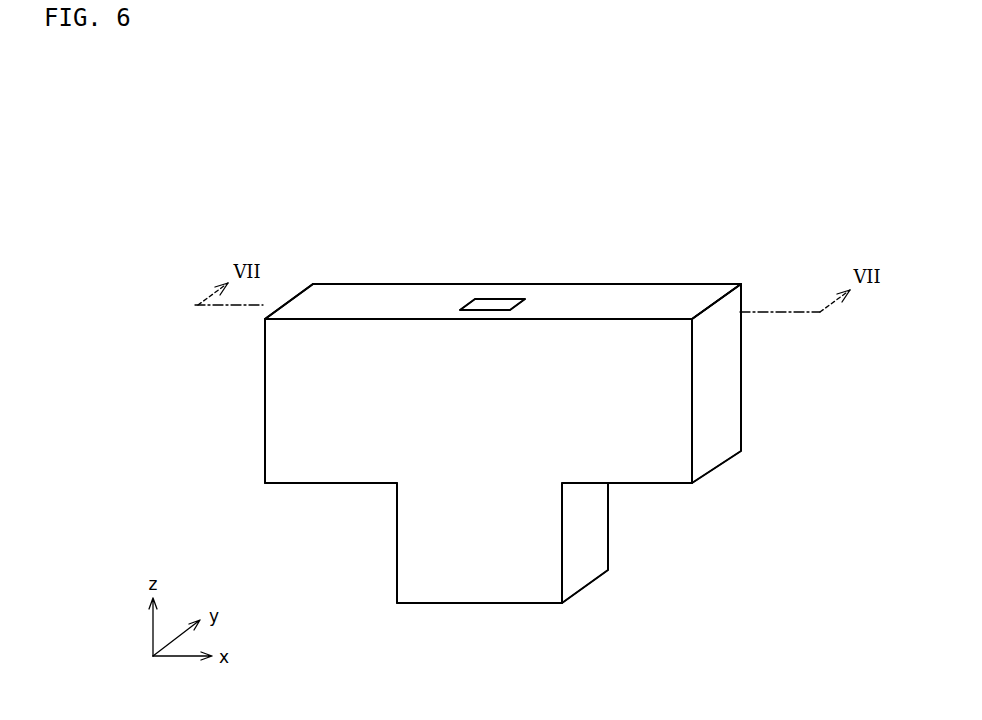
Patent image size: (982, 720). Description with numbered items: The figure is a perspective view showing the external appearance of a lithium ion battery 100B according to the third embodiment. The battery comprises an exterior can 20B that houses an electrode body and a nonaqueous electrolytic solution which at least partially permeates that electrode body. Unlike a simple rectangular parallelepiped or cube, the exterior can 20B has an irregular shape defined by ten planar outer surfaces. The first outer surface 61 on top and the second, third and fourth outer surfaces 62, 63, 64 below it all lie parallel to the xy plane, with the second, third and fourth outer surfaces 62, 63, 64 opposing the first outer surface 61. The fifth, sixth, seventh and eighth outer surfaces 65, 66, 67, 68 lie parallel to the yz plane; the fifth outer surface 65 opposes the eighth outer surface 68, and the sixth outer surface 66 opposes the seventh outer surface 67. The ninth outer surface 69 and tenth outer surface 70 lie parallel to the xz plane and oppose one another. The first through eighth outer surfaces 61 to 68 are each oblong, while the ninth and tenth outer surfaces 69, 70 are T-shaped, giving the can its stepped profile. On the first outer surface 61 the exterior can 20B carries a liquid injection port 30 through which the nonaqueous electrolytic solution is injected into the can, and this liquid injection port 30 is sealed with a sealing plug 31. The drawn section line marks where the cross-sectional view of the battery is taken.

The lithium ion battery 100B is at (612, 192).
The exterior can 20B is at (380, 300).
The liquid injection port 30 is at (508, 284).
The sealing plug 31 is at (492, 308).
The first outer surface 61 is at (434, 280).
The second outer surface 62 is at (320, 457).
The third outer surface 63 is at (667, 457).
The fourth outer surface 64 is at (502, 573).
The fifth outer surface 65 is at (296, 372).
The sixth outer surface 66 is at (427, 537).
The seventh outer surface 67 is at (587, 550).
The eighth outer surface 68 is at (726, 391).
The ninth outer surface 69 is at (285, 416).
The tenth outer surface 70 is at (591, 307).